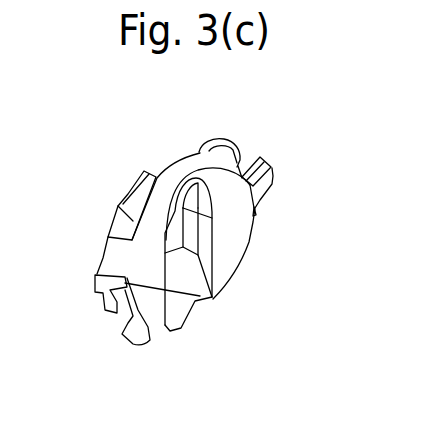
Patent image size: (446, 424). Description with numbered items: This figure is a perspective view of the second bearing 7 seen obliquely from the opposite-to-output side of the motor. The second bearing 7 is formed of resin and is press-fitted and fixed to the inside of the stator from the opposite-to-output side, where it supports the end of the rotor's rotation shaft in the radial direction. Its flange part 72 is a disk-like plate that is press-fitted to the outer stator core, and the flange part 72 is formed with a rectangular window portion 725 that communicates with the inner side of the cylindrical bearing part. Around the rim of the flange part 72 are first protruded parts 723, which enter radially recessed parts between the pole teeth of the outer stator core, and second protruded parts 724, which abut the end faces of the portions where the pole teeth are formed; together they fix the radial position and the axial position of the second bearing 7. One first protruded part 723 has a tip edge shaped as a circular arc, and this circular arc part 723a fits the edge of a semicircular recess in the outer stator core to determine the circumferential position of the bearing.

The second bearing 7 is at (278, 146).
The flange part 72 is at (241, 228).
The first protruded parts 723 is at (145, 172).
The circular arc part 723a is at (105, 302).
The second protruded parts 724 is at (262, 184).
The rectangular window portion 725 is at (205, 251).